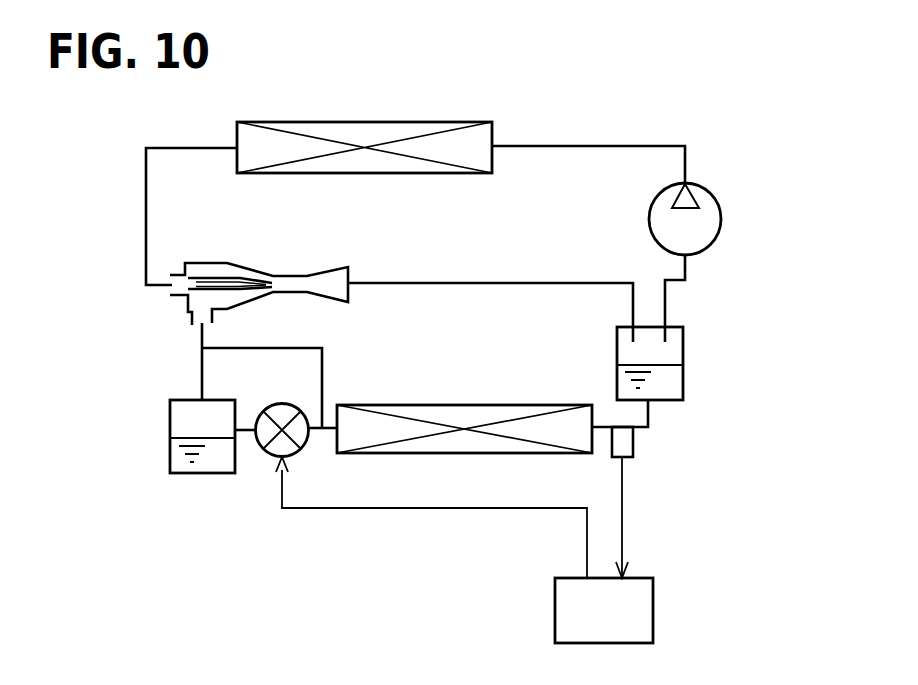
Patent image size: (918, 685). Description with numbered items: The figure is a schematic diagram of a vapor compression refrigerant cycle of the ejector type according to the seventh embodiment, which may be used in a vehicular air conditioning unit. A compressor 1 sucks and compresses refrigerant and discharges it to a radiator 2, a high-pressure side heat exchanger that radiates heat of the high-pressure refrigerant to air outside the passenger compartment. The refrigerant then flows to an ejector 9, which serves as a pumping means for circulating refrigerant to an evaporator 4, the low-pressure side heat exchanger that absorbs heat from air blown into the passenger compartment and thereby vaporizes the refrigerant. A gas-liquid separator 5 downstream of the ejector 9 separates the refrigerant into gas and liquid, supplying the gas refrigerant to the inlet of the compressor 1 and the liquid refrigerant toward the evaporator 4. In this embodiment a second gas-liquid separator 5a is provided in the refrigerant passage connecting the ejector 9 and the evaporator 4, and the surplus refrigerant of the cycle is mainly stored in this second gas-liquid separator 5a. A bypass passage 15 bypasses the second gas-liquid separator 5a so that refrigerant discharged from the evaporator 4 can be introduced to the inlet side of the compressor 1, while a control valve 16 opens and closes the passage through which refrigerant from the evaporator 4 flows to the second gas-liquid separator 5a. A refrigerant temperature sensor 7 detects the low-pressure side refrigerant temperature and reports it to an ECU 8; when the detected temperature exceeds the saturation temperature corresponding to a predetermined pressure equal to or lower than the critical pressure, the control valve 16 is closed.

The compressor 1 is at (722, 220).
The radiator 2 is at (429, 122).
The evaporator 4 is at (526, 405).
The gas-liquid separator 5 is at (683, 367).
The second gas-liquid separator 5a is at (170, 443).
The refrigerant temperature sensor 7 is at (633, 441).
The ECU 8 is at (555, 612).
The ejector 9 is at (293, 274).
The bypass passage 15 is at (322, 362).
The control valve 16 is at (256, 443).